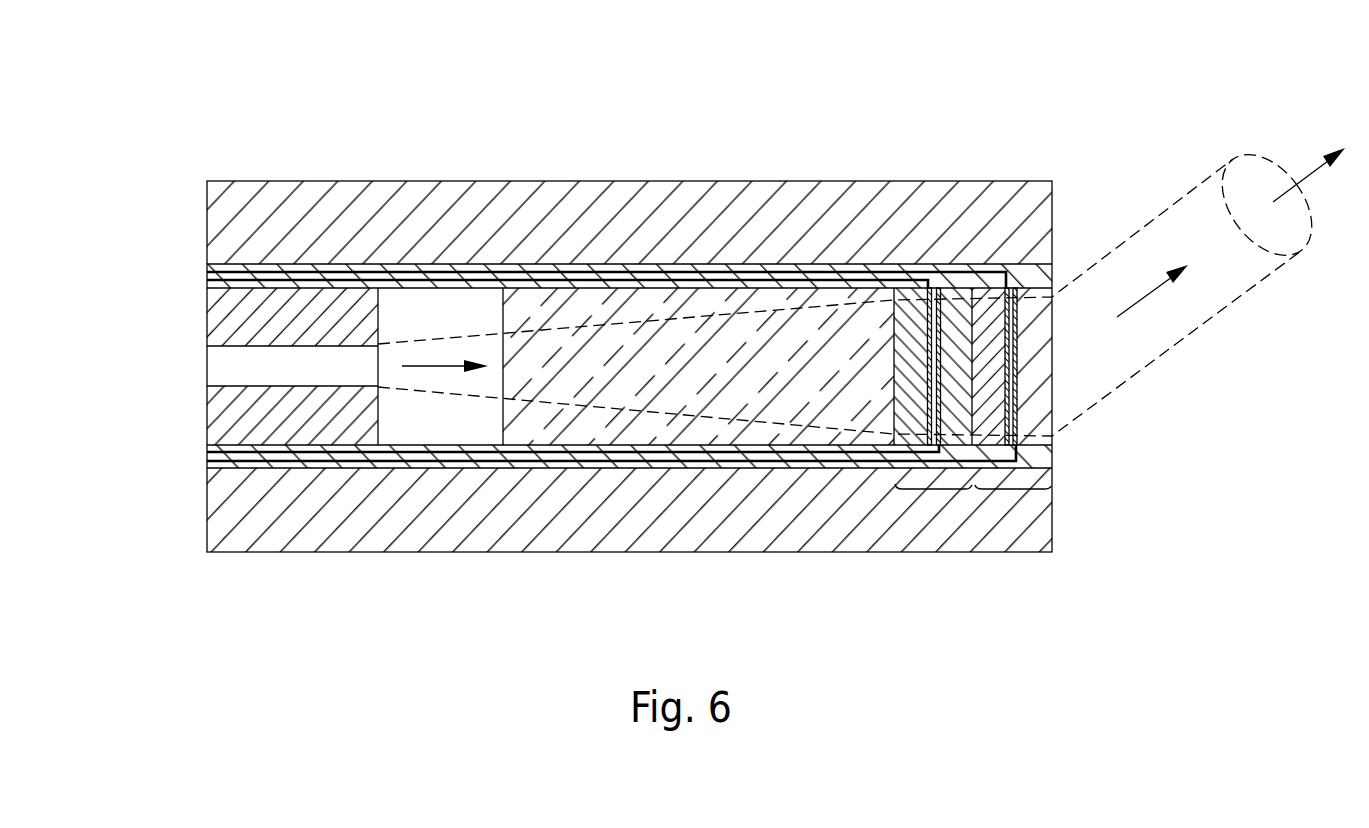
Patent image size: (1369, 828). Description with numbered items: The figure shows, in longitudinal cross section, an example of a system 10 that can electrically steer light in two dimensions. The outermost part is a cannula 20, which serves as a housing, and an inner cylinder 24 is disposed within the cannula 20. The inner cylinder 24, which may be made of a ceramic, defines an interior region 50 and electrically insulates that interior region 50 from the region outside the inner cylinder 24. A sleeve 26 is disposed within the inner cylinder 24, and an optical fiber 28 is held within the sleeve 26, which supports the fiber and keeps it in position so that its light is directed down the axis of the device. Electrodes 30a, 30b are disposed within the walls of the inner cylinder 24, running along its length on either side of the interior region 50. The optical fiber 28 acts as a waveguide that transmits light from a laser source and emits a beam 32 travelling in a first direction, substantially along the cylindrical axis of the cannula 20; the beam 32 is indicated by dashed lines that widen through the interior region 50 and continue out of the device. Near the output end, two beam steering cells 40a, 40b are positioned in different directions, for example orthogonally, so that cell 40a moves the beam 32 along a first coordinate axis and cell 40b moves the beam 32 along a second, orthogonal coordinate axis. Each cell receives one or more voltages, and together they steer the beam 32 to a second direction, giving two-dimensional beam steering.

The system 10 is at (343, 110).
The cannula 20 is at (600, 181).
The inner cylinder 24 is at (632, 472).
The sleeve 26 is at (207, 413).
The optical fiber 28 is at (207, 367).
The electrode 30a is at (207, 281).
The electrode 30b is at (207, 452).
The beam 32 is at (437, 338).
The beam steering cell 40a is at (933, 490).
The beam steering cell 40b is at (1012, 490).
The interior region 50 is at (455, 429).